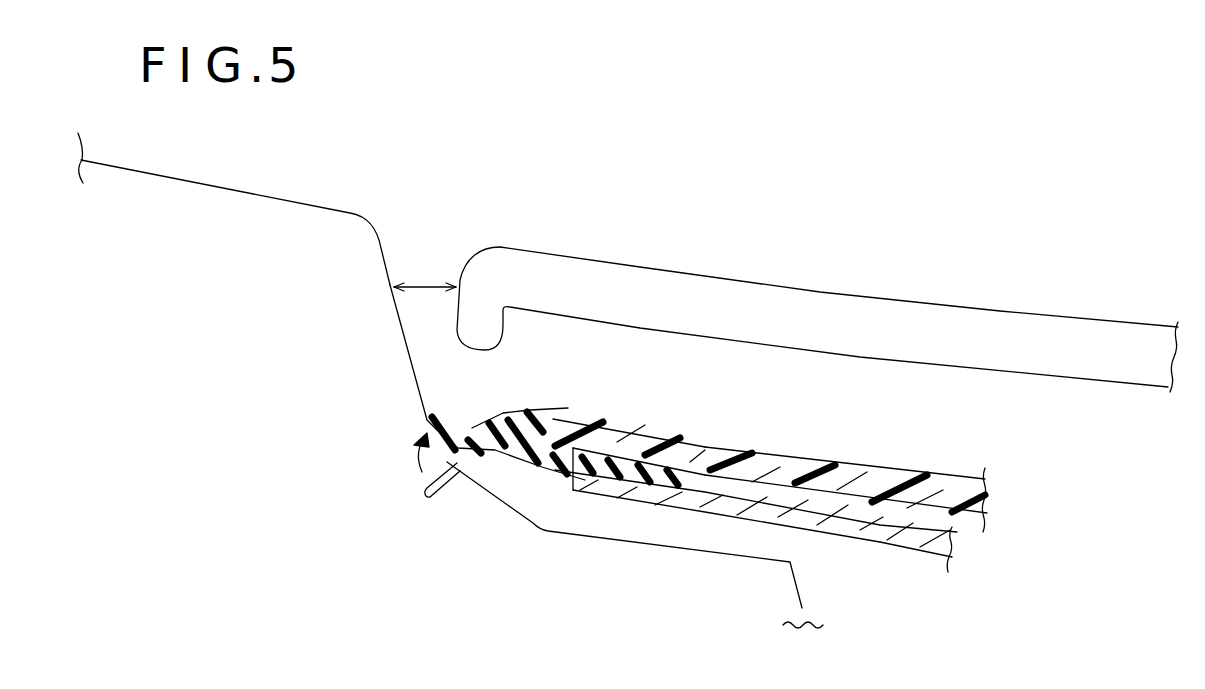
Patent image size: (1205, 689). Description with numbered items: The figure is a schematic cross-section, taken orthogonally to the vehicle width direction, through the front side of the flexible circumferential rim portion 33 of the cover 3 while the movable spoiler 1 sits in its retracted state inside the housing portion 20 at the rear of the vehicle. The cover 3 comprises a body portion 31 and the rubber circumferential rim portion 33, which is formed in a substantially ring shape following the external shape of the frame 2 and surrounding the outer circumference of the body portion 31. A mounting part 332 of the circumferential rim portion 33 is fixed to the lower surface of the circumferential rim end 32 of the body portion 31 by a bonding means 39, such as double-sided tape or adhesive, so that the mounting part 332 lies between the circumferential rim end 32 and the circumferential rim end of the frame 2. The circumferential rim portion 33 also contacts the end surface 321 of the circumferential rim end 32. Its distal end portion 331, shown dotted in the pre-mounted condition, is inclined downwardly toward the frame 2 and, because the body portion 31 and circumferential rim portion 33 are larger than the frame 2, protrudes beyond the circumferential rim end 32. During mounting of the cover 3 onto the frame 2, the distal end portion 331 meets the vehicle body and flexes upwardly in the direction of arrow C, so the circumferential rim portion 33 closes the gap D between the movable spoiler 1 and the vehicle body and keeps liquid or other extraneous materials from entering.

The movable spoiler 1 is at (883, 312).
The frame 2 is at (918, 568).
The cover 3 is at (955, 463).
The housing portion 20 is at (705, 561).
The body portion 31 is at (823, 460).
The circumferential rim end 32 is at (623, 402).
The end surface 321 is at (568, 413).
The circumferential rim portion 33 is at (559, 492).
The distal end portion 331 is at (437, 418).
The mounting part 332 is at (652, 483).
The bonding means 39 is at (688, 458).
The arrow C is at (420, 470).
The gap D is at (440, 282).